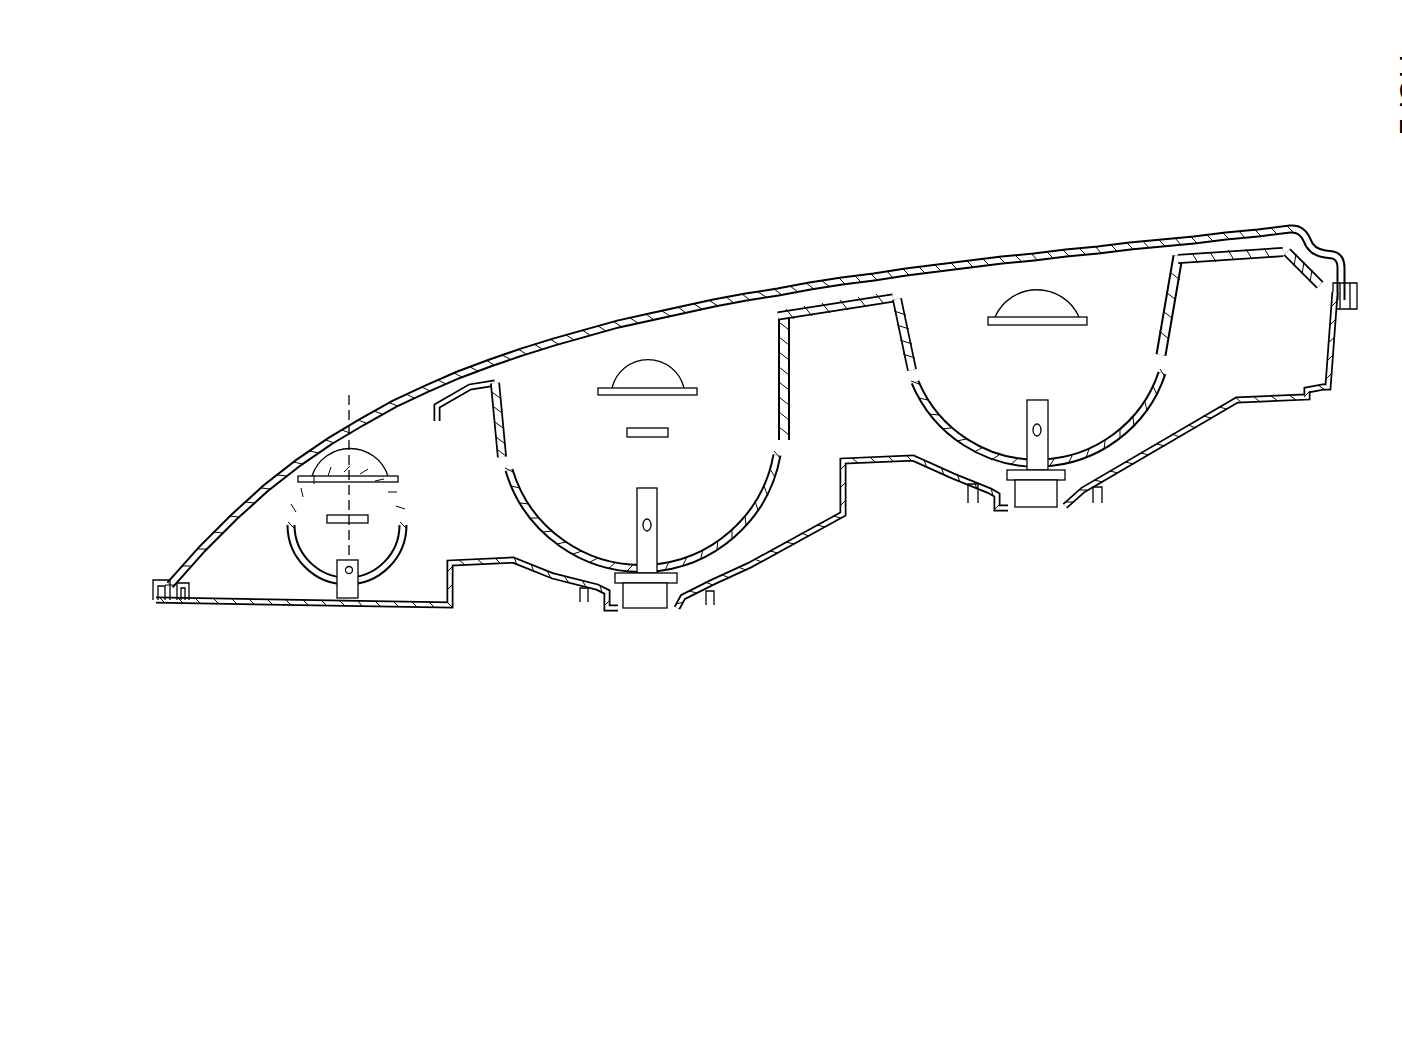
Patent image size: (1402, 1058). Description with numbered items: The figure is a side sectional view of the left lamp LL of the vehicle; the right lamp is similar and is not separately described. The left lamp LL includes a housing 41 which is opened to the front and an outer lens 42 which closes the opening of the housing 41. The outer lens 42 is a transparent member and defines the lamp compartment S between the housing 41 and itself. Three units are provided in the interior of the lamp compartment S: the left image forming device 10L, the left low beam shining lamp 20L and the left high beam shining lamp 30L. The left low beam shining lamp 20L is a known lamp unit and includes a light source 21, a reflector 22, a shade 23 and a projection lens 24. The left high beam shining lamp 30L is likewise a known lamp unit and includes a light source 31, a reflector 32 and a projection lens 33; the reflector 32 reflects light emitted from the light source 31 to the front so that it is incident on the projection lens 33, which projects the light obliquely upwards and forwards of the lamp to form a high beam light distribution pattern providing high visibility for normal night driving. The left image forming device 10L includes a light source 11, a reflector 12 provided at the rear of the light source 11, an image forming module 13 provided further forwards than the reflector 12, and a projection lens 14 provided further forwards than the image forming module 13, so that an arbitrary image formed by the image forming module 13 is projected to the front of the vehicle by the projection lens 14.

The left image forming device 10L is at (342, 447).
The light source 11 is at (363, 570).
The reflector 12 is at (300, 563).
The image forming module 13 is at (327, 518).
The projection lens 14 is at (319, 468).
The left low beam shining lamp 20L is at (633, 357).
The light source 21 is at (660, 513).
The reflector 22 is at (773, 487).
The shade 23 is at (627, 432).
The projection lens 24 is at (616, 372).
The left high beam shining lamp 30L is at (1023, 290).
The light source 31 is at (1050, 418).
The reflector 32 is at (1153, 400).
The projection lens 33 is at (1043, 292).
The housing 41 is at (227, 610).
The outer lens 42 is at (737, 297).
The lamp compartment S is at (247, 556).
The left lamp LL is at (910, 652).